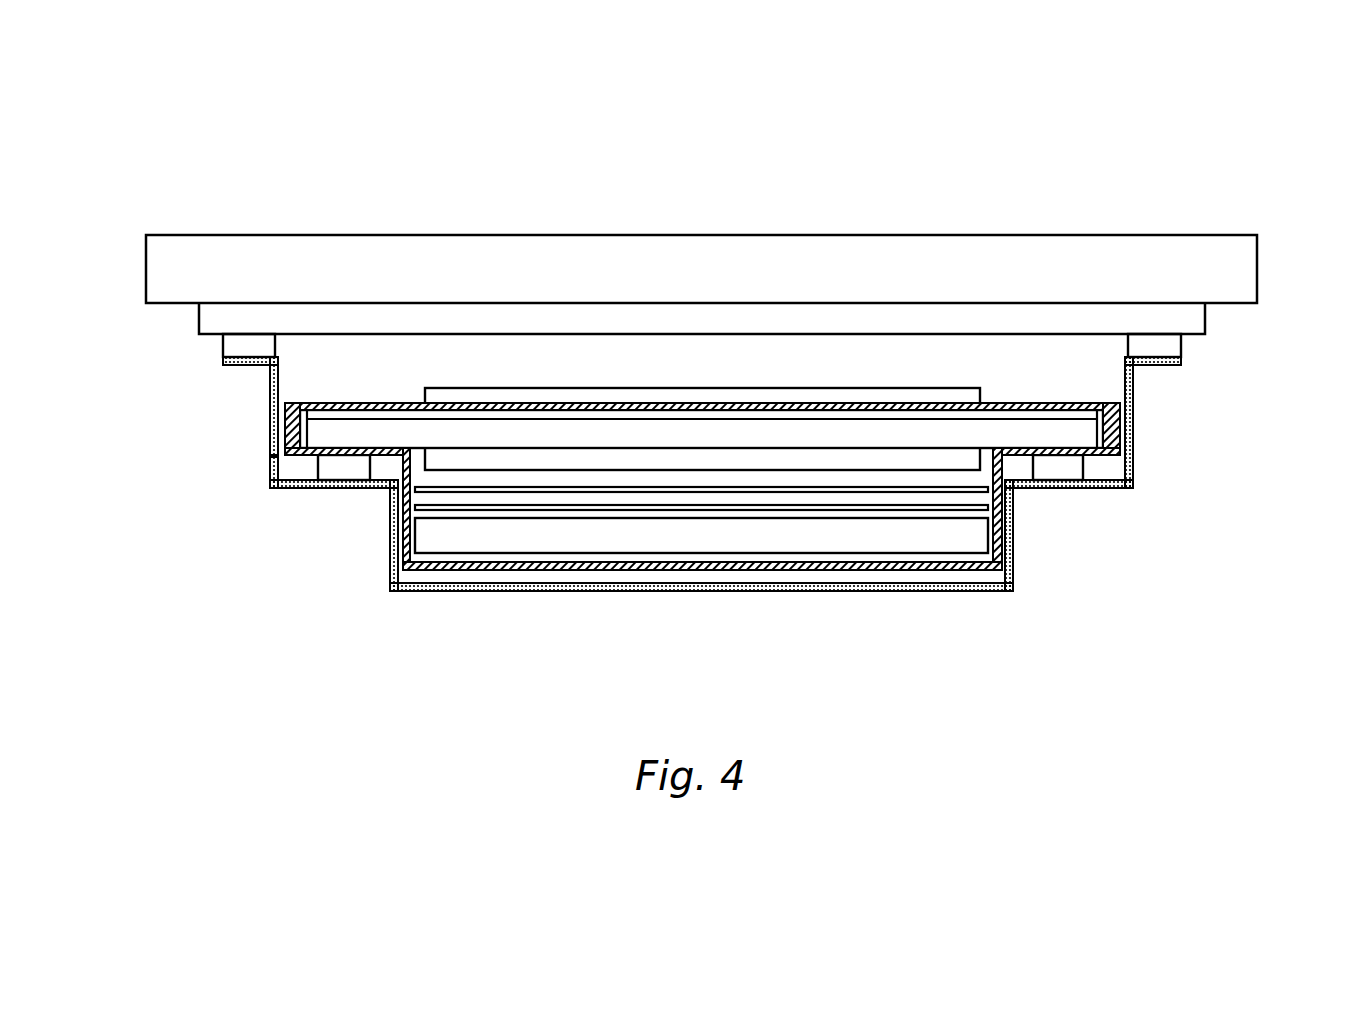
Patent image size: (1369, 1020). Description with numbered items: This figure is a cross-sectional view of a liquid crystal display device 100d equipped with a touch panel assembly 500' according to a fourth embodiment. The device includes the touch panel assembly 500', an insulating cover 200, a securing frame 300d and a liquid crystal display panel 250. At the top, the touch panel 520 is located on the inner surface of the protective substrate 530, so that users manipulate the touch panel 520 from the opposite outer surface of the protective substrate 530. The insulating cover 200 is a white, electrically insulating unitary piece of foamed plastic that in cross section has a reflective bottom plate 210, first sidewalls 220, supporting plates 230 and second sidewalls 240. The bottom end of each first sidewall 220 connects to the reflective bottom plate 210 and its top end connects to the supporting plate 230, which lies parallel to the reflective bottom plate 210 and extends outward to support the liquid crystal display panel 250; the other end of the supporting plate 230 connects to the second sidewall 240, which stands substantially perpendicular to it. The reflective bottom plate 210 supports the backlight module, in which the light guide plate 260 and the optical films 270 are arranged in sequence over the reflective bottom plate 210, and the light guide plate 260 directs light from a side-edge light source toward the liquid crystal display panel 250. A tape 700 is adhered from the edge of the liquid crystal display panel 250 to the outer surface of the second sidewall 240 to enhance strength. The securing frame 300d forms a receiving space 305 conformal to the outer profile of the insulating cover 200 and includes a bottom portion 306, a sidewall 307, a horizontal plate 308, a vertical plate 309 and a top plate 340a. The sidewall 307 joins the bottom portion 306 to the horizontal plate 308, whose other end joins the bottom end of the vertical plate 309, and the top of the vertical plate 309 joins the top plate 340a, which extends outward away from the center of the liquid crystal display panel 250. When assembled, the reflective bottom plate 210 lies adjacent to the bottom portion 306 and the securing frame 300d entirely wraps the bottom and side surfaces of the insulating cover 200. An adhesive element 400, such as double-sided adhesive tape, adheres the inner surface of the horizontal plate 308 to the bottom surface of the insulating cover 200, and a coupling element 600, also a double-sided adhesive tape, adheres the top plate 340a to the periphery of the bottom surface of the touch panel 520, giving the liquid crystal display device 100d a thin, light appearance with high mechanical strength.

The liquid crystal display device 100d is at (1214, 186).
The touch panel assembly 500' is at (701, 206).
The protective substrate 530 is at (472, 250).
The touch panel 520 is at (574, 318).
The coupling element 600 is at (1160, 345).
The tape 700 is at (335, 403).
The securing frame 300d is at (457, 682).
The top plate 340a is at (237, 363).
The vertical plate 309 is at (257, 455).
The receiving space 305 is at (292, 465).
The horizontal plate 308 is at (338, 487).
The sidewall 307 is at (383, 565).
The bottom portion 306 is at (457, 593).
The adhesive element 400 is at (1057, 472).
The insulating cover 200 is at (1252, 405).
The second sidewall 240 is at (1120, 432).
The supporting plate 230 is at (1110, 468).
The liquid crystal display panel 250 is at (547, 432).
The light guide plate 260 is at (640, 537).
The optical films 270 is at (805, 487).
The first sidewall 220 is at (1005, 540).
The reflective bottom plate 210 is at (953, 572).